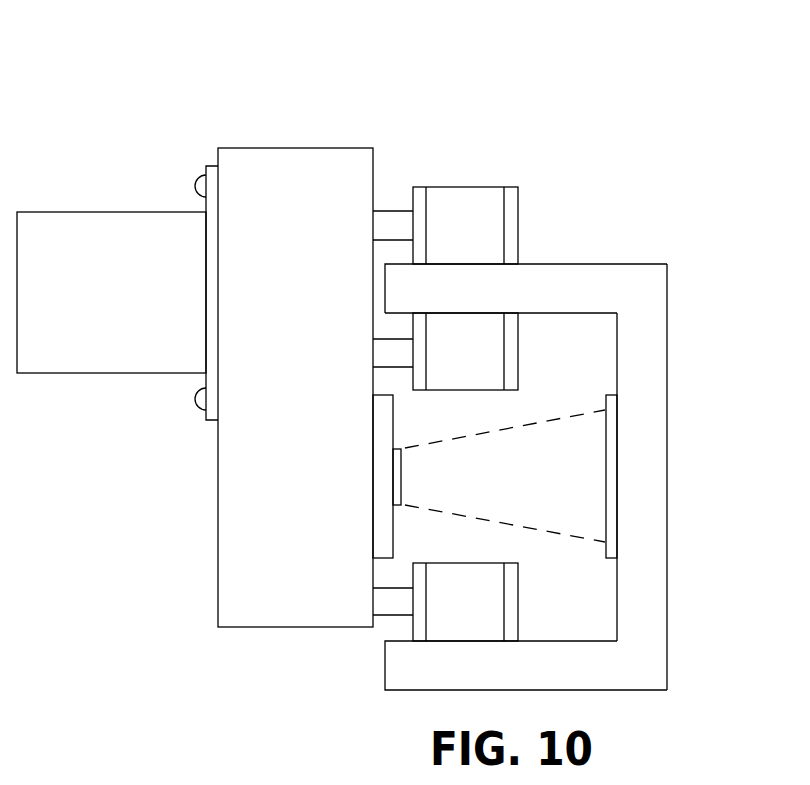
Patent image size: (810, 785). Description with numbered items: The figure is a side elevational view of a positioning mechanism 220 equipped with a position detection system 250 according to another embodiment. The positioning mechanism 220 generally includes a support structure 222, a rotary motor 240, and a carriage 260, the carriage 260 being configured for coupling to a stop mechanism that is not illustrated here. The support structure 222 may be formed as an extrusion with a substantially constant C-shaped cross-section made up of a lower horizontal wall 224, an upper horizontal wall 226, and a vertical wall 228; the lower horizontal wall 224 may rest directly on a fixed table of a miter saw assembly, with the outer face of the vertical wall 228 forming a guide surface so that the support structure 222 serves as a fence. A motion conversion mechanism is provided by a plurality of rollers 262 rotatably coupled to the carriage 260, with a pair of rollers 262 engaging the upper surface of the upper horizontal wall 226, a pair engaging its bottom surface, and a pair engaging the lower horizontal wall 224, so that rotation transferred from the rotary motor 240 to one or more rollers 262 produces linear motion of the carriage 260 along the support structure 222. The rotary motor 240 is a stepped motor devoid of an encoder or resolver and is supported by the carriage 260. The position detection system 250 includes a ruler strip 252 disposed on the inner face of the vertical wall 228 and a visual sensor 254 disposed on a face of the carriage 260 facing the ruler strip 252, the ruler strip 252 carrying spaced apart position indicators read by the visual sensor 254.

The positioning mechanism 220 is at (151, 94).
The support structure 222 is at (681, 256).
The lower horizontal wall 224 is at (403, 680).
The upper horizontal wall 226 is at (597, 272).
The vertical wall 228 is at (658, 593).
The rotary motor 240 is at (110, 227).
The position detection system 250 is at (541, 405).
The ruler strip 252 is at (605, 450).
The visual sensor 254 is at (403, 485).
The carriage 260 is at (303, 165).
The rollers 262 is at (465, 193).